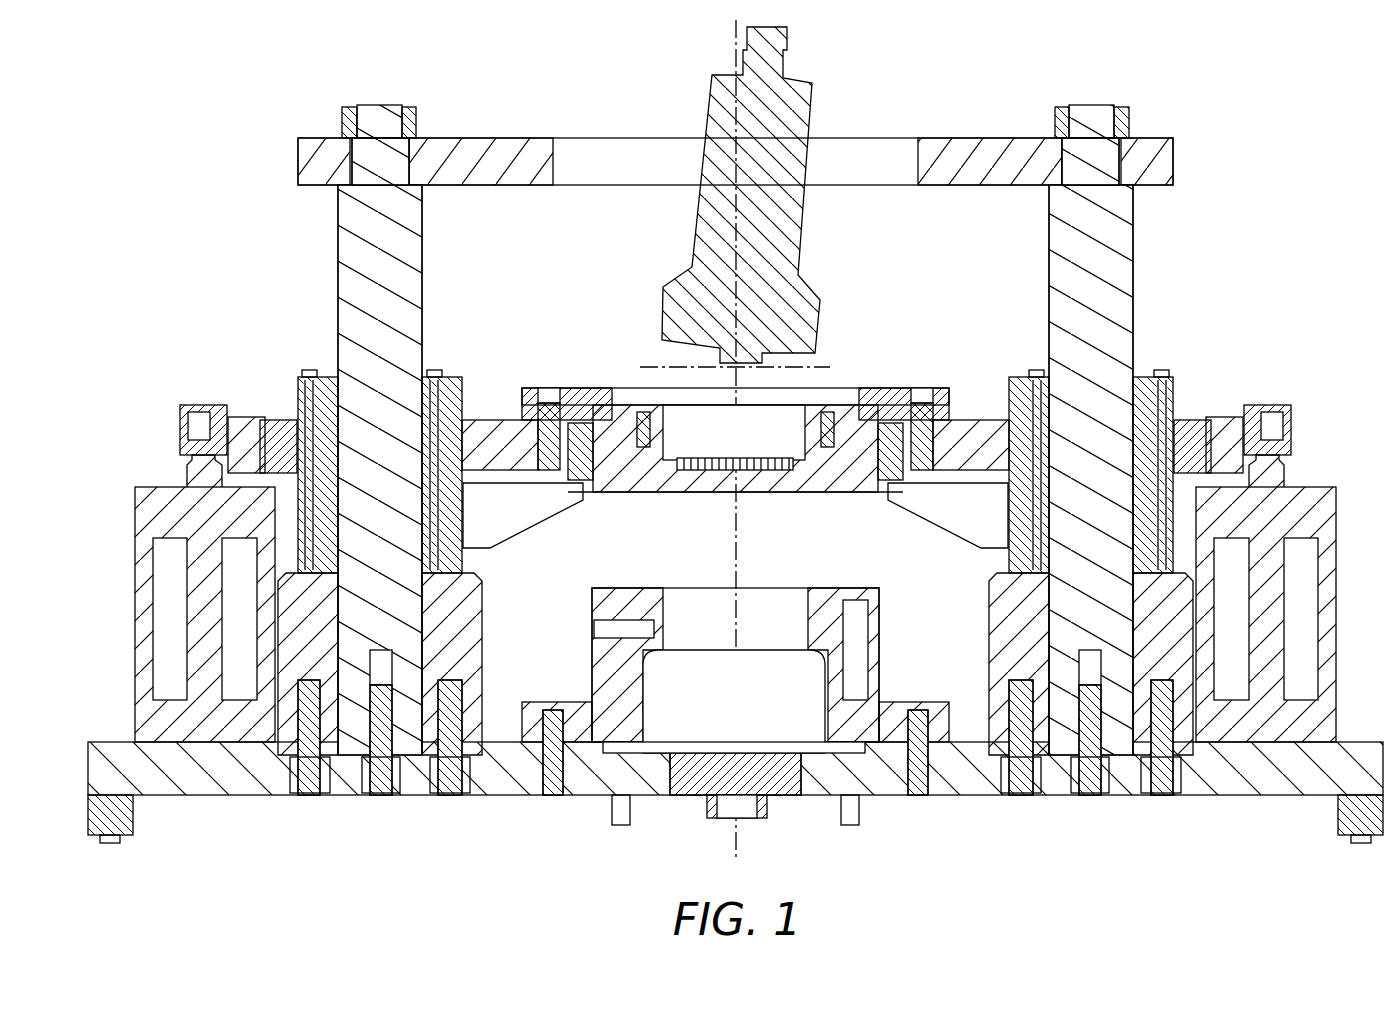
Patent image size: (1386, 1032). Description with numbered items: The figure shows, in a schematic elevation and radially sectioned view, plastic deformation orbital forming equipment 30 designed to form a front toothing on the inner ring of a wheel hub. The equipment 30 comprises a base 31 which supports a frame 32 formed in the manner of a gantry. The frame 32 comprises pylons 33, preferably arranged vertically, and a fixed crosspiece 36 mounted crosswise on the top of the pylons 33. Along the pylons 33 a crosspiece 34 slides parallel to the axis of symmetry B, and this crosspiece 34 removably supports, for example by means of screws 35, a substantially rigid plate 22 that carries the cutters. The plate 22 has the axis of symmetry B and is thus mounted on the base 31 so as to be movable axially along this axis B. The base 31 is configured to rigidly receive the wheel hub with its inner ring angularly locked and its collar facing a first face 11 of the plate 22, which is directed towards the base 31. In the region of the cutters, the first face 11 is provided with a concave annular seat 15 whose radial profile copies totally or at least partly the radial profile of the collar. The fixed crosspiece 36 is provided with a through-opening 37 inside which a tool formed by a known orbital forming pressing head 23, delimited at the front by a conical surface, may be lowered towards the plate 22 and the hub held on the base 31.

The first face 11 is at (830, 470).
The concave annular seat 15 is at (787, 446).
The plate 22 is at (660, 445).
The orbital forming pressing head 23 is at (790, 245).
The orbital forming equipment 30 is at (735, 444).
The base 31 is at (600, 765).
The frame 32 is at (292, 278).
The pylons 33 is at (415, 283).
The crosspiece 34 is at (945, 480).
The screws 35 is at (548, 395).
The fixed crosspiece 36 is at (510, 150).
The through-opening 37 is at (912, 160).
The axis of symmetry B is at (737, 833).